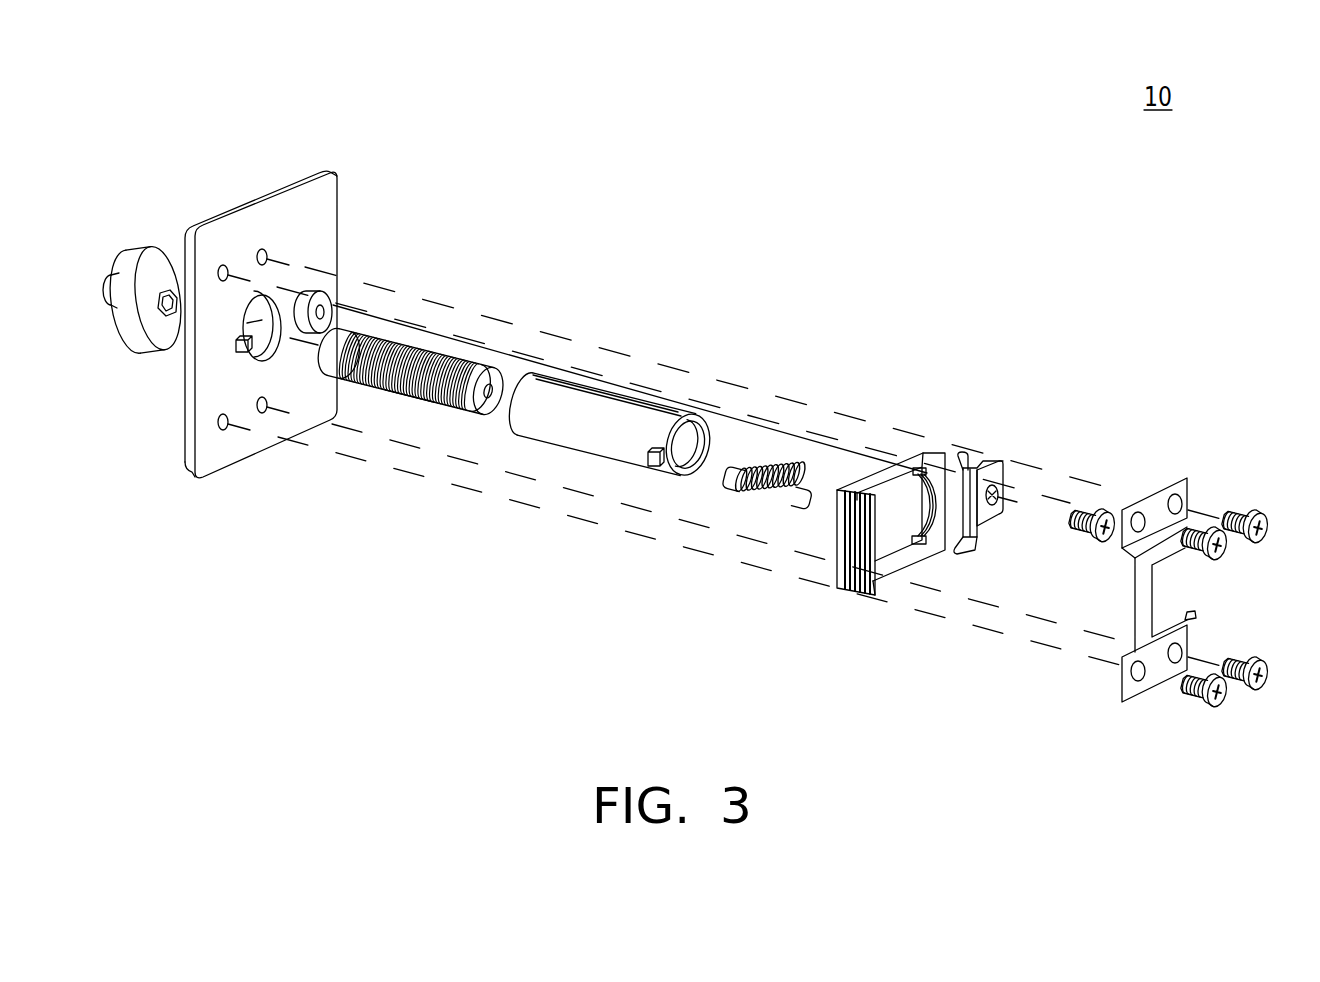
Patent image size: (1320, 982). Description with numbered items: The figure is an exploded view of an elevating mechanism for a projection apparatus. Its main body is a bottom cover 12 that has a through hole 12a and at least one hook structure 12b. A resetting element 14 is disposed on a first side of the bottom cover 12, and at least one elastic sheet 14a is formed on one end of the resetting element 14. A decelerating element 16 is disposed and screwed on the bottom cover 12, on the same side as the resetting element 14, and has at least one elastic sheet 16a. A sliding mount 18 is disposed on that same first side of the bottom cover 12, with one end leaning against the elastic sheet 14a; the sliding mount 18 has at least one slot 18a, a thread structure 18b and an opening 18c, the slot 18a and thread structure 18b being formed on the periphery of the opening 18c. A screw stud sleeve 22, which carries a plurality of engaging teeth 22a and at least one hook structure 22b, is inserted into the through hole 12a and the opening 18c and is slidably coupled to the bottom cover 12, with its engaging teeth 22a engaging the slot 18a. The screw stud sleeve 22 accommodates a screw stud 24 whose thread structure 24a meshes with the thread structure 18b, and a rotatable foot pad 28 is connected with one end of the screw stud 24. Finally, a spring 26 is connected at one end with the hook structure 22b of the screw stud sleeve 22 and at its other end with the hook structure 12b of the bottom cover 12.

The bottom cover 12 is at (270, 187).
The through hole 12a is at (264, 318).
The hook structure 12b is at (238, 352).
The resetting element 14 is at (988, 463).
The elastic sheet 14a is at (972, 552).
The decelerating element 16 is at (1152, 478).
The elastic sheet 16a is at (1195, 616).
The sliding mount 18 is at (863, 471).
The slot 18a is at (890, 532).
The thread structure 18b is at (920, 480).
The opening 18c is at (878, 592).
The screw stud sleeve 22 is at (620, 389).
The engaging teeth 22a is at (568, 380).
The hook structure 22b is at (652, 466).
The screw stud 24 is at (440, 353).
The thread structure 24a is at (412, 395).
The spring 26 is at (760, 503).
The rotatable foot pad 28 is at (125, 265).